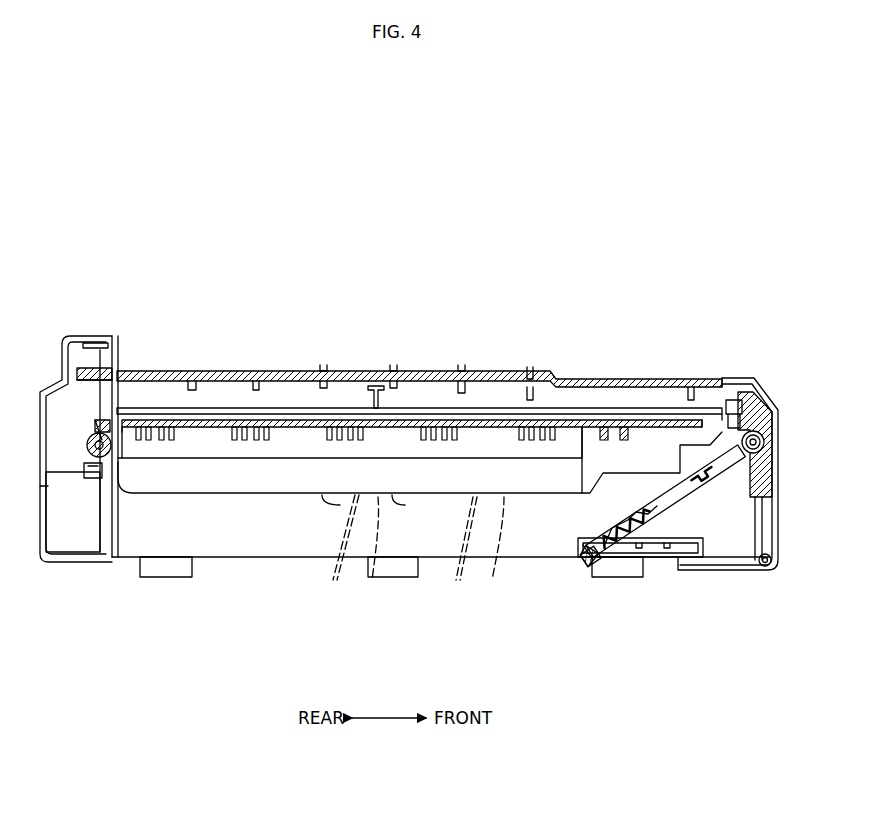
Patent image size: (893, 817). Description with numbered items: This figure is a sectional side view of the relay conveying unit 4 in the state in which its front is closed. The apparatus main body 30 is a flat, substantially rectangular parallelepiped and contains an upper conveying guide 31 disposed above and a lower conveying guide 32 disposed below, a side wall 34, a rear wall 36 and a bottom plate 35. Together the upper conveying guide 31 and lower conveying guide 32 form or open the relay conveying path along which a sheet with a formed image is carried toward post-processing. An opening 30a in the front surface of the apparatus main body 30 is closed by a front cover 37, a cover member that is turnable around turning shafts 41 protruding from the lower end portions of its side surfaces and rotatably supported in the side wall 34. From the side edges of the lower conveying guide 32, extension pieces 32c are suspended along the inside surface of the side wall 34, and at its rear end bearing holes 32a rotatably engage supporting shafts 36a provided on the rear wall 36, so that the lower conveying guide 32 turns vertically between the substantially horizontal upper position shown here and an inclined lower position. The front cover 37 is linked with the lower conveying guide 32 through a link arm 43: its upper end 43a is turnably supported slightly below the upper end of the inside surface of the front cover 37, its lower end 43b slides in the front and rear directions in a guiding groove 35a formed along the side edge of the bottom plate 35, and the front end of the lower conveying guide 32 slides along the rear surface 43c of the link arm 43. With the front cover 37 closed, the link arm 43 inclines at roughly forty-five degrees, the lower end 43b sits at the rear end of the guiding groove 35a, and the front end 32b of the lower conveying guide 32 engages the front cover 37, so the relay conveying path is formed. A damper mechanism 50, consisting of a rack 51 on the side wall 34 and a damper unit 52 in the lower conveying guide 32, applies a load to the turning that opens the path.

The relay conveying unit 4 is at (268, 280).
The apparatus main body 30 is at (222, 371).
The opening 30a is at (712, 379).
The upper conveying guide 31 is at (305, 371).
The lower conveying guide 32 is at (408, 408).
The bearing hole 32a is at (104, 428).
The front end 32b is at (736, 402).
The extension piece 32c is at (494, 472).
The side wall 34 is at (262, 540).
The bottom plate 35 is at (220, 560).
The guiding groove 35a is at (650, 560).
The rear wall 36 is at (68, 518).
The supporting shaft 36a is at (88, 437).
The front cover 37 is at (752, 376).
The turning shaft 41 is at (767, 568).
The link arm 43 is at (688, 500).
The upper end 43a is at (764, 432).
The lower end 43b is at (600, 556).
The rear surface 43c is at (645, 488).
The damper mechanism 50 is at (506, 625).
The rack 51 is at (340, 582).
The damper unit 52 is at (375, 584).